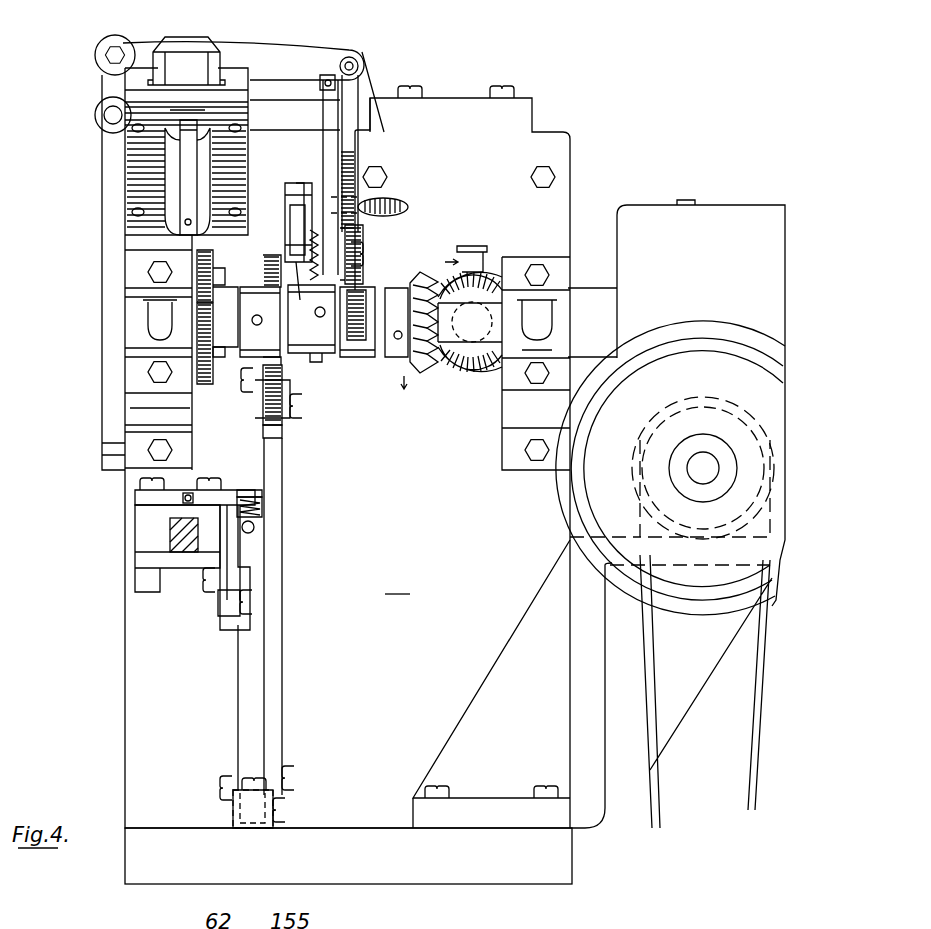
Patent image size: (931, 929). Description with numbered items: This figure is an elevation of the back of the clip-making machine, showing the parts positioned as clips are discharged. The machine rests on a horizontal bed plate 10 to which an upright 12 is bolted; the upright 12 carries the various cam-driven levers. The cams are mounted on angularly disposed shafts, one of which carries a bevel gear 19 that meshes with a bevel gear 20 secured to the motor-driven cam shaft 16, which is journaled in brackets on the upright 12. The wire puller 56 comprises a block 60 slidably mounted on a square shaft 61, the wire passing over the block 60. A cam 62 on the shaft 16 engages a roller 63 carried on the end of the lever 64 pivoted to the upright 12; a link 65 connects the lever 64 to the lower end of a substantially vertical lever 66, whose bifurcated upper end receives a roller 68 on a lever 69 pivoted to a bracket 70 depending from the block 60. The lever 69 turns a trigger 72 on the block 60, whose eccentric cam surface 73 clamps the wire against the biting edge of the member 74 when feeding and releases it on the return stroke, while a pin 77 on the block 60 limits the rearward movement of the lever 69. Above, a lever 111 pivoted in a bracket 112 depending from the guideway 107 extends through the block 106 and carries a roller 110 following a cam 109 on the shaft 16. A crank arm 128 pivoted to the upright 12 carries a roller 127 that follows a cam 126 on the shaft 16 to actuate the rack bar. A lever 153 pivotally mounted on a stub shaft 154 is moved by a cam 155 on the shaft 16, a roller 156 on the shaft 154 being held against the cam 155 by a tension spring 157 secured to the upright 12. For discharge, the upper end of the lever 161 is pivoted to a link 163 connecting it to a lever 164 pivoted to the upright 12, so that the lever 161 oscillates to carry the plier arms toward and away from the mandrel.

The bed plate 10 is at (347, 872).
The upright 12 is at (455, 440).
The shaft 16 is at (384, 362).
The bevel gear 19 is at (466, 372).
The bevel gear 20 is at (423, 377).
The wire puller 56 is at (170, 623).
The block 60 is at (148, 538).
The square shaft 61 is at (172, 543).
The cam 62 is at (264, 265).
The roller 63 is at (277, 410).
The lever 64 is at (256, 363).
The link 65 is at (276, 612).
The lever 66 is at (248, 720).
The roller 68 is at (233, 496).
The lever 69 is at (228, 616).
The bracket 70 is at (213, 614).
The trigger 72 is at (218, 498).
The eccentric cam surface 73 is at (194, 490).
The member 74 is at (160, 497).
The pin 77 is at (260, 512).
The block 106 is at (205, 66).
The guideway 107 is at (138, 168).
The cam 109 is at (207, 385).
The roller 110 is at (207, 265).
The lever 111 is at (190, 183).
The bracket 112 is at (207, 168).
The cam 126 is at (360, 290).
The roller 127 is at (355, 252).
The crank arm 128 is at (332, 157).
The lever 153 is at (300, 183).
The stub shaft 154 is at (392, 204).
The cam 155 is at (300, 290).
The roller 156 is at (290, 243).
The tension spring 157 is at (330, 362).
The lever 161 is at (112, 318).
The link 163 is at (318, 52).
The lever 164 is at (366, 80).